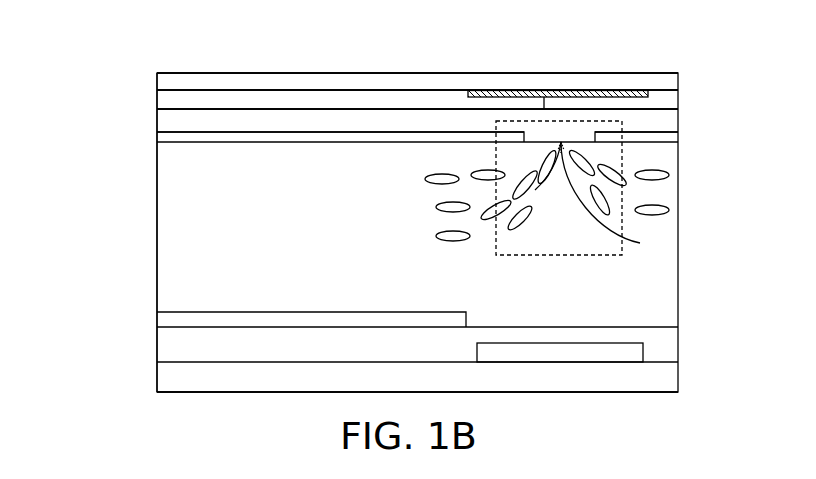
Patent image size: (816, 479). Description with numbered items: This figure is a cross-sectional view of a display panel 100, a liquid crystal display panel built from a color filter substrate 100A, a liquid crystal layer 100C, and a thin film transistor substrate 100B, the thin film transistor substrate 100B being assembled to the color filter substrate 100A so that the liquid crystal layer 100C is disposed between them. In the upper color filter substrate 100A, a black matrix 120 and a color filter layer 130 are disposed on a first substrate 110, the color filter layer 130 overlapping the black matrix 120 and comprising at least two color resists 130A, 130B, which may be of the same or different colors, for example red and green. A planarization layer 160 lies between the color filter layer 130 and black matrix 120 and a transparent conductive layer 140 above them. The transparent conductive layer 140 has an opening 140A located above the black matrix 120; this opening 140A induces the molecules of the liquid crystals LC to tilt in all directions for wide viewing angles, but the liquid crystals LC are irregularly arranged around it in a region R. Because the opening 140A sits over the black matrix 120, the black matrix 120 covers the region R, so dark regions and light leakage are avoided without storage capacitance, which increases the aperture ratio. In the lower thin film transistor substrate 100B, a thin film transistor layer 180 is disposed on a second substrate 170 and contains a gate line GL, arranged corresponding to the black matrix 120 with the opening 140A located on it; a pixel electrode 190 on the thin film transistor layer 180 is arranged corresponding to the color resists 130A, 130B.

The display panel 100 is at (70, 41).
The color filter substrate 100A is at (660, 58).
The thin film transistor substrate 100B is at (652, 405).
The liquid crystal layer 100C is at (176, 244).
The first substrate 110 is at (670, 82).
The black matrix 120 is at (568, 91).
The color filter layer 130 is at (417, 99).
The color resist 130A is at (403, 99).
The color resist 130B is at (670, 102).
The transparent conductive layer 140 is at (670, 140).
The opening 140A is at (640, 243).
The planarization layer 160 is at (667, 122).
The second substrate 170 is at (666, 376).
The thin film transistor layer 180 is at (668, 339).
The pixel electrode 190 is at (168, 319).
The liquid crystals LC is at (668, 176).
The gate line GL is at (633, 352).
The region R is at (612, 257).